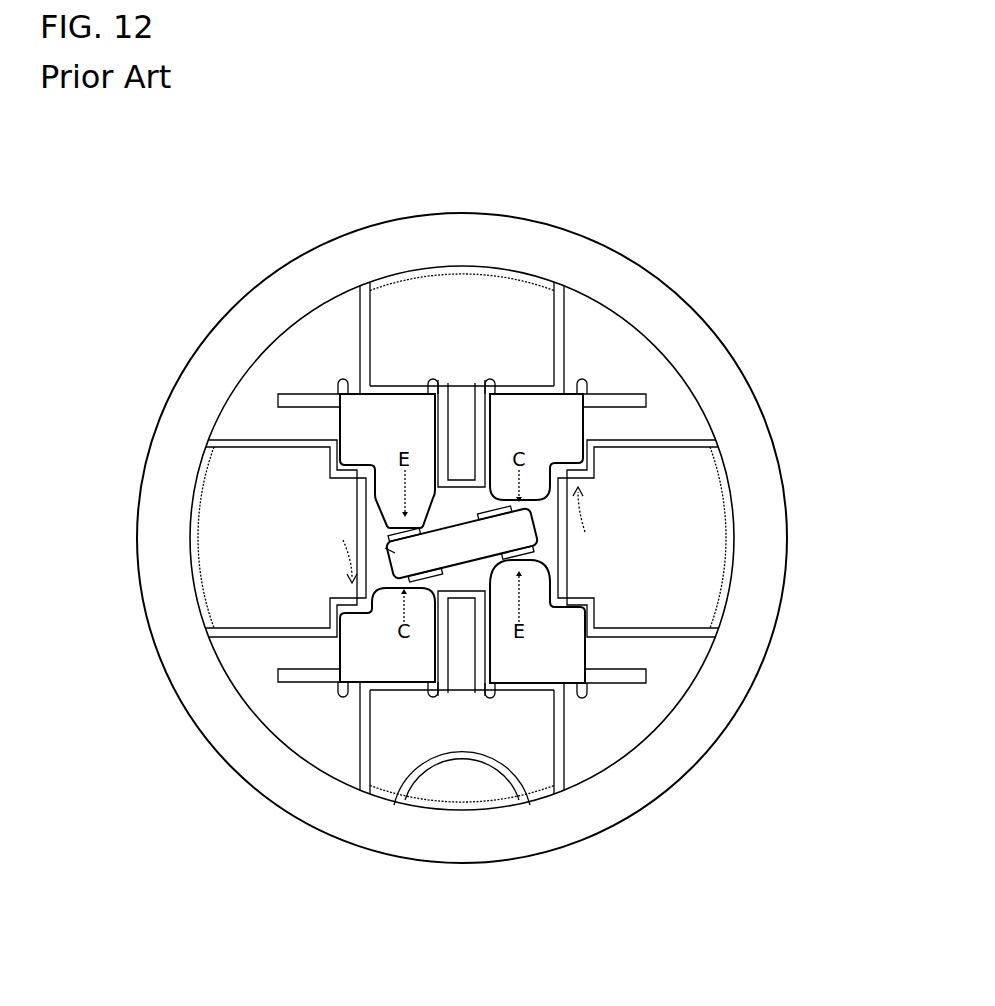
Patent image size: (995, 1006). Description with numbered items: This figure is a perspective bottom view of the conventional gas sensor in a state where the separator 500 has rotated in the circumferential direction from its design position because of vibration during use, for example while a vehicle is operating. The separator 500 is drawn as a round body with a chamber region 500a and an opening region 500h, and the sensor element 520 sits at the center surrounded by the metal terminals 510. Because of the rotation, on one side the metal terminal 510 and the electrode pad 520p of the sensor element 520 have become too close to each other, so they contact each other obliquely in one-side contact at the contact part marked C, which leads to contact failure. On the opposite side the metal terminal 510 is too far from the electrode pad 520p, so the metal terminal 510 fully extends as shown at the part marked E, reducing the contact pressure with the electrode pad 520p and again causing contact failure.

The separator 500 is at (228, 707).
The housing chamber 500a is at (700, 548).
The housing opening 500h is at (458, 510).
The metal terminal 510 is at (392, 503).
The sensor element 520 is at (385, 548).
The electrode pad 520p is at (385, 535).